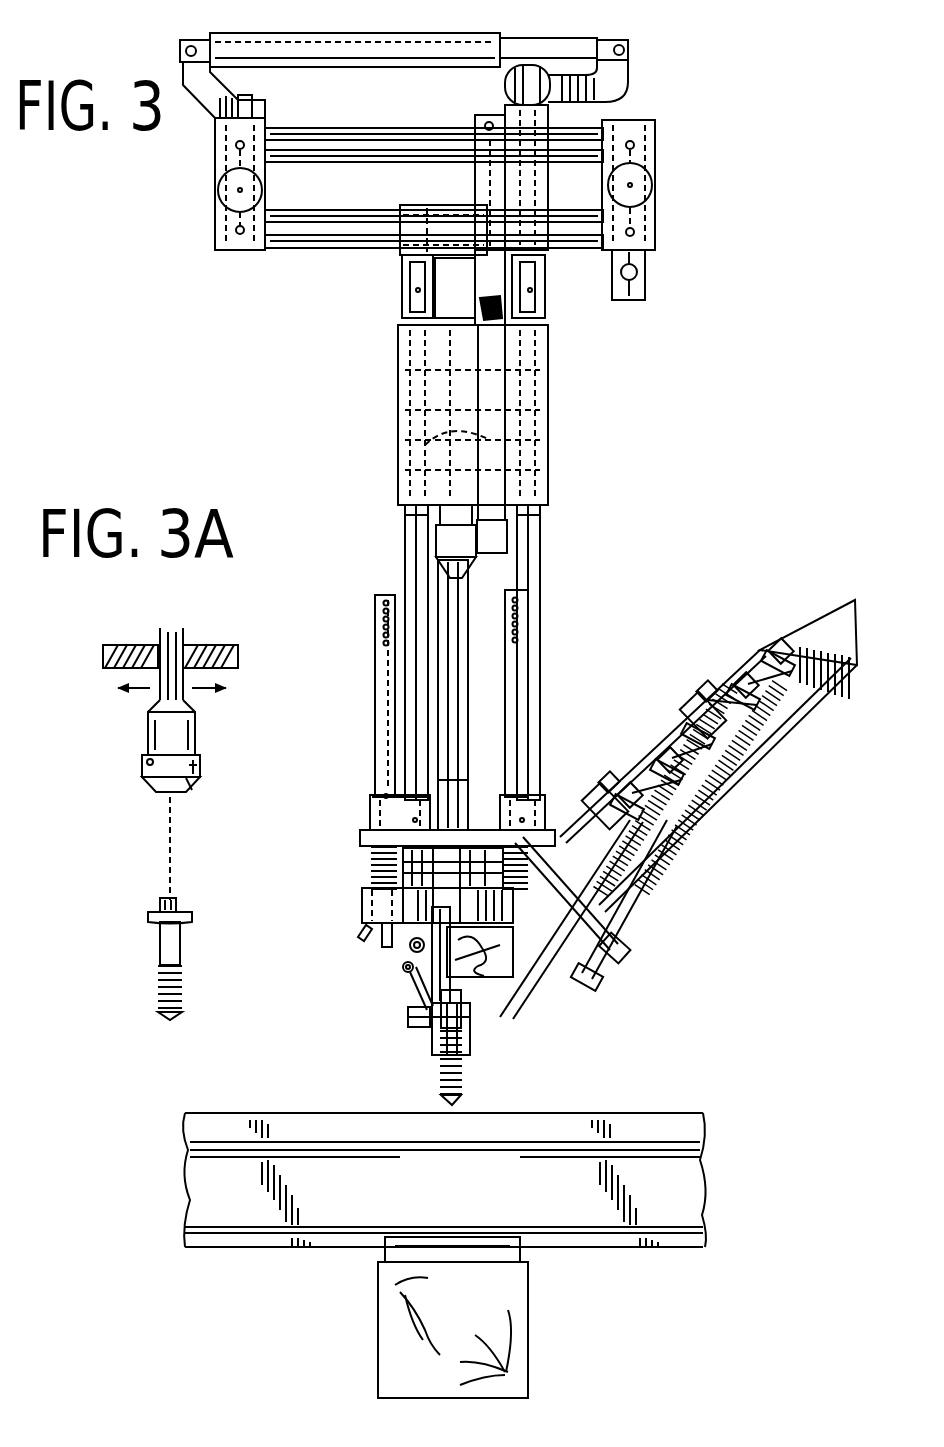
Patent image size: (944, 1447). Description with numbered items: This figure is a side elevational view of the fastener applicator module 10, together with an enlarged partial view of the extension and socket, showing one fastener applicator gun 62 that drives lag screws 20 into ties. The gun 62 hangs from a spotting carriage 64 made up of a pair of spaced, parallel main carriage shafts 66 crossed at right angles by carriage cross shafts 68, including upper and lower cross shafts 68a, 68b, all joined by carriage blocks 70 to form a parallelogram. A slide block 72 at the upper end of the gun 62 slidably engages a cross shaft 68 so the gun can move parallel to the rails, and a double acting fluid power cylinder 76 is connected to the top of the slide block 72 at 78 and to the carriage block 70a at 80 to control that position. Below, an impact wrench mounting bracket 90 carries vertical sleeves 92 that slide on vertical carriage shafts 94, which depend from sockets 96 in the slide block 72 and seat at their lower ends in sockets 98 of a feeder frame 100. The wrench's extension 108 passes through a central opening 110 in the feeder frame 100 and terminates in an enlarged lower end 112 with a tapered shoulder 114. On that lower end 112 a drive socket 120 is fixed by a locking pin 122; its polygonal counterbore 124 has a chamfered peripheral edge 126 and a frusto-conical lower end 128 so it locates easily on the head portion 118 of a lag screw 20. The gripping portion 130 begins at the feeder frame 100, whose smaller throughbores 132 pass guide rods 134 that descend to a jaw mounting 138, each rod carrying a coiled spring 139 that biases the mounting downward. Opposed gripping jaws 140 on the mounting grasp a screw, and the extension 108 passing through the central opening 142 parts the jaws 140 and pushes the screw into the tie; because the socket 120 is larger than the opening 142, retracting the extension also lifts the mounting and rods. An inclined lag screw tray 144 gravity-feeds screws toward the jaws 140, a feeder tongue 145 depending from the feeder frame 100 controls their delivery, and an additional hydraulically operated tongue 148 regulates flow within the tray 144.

In FIG. 3, the fastener applicator module 10 is at (732, 132).
In FIG. 3, the lag screw 20 is at (455, 1102).
In FIG. 3A, the lag screw 20 is at (172, 955).
In FIG. 3, the fastener applicator unit 62 is at (552, 448).
In FIG. 3, the spotting carriage 64 is at (655, 143).
In FIG. 3, the main carriage shaft 66 is at (238, 190).
In FIG. 3, the carriage cross shaft 68 is at (428, 148).
In FIG. 3, the upper cross shaft 68a is at (300, 135).
In FIG. 3, the lower cross shaft 68b is at (308, 236).
In FIG. 3, the carriage block 70 is at (655, 250).
In FIG. 3, the carriage block 70a is at (245, 252).
In FIG. 3, the slide block 72 is at (440, 205).
In FIG. 3, the double acting fluid power cylinder 76 is at (395, 52).
In FIG. 3, the connection point 78 is at (630, 48).
In FIG. 3, the connection point 80 is at (185, 42).
In FIG. 3, the impact wrench mounting bracket 90 is at (398, 470).
In FIG. 3, the vertically extending sleeve 92 is at (400, 507).
In FIG. 3, the vertical carriage shaft 94 is at (410, 570).
In FIG. 3, the socket 96 is at (400, 295).
In FIG. 3, the socket 98 is at (370, 815).
In FIG. 3, the feeder frame 100 is at (360, 838).
In FIG. 3, the extension 108 is at (455, 625).
In FIG. 3A, the extension 108 is at (185, 635).
In FIG. 3, the opening 110 is at (445, 830).
In FIG. 3, the lower end 112 is at (412, 948).
In FIG. 3A, the lower end 112 is at (195, 722).
In FIG. 3A, the shoulder 114 is at (150, 704).
In FIG. 3A, the head portion 118 is at (178, 905).
In FIG. 3, the drive socket 120 is at (440, 1000).
In FIG. 3A, the drive socket 120 is at (200, 766).
In FIG. 3A, the locking pin 122 is at (142, 760).
In FIG. 3A, the polygonal-shaped counterbore 124 is at (172, 800).
In FIG. 3A, the peripheral edge 126 is at (150, 782).
In FIG. 3A, the lower end 128 is at (190, 790).
In FIG. 3, the gripping portion 130 is at (338, 973).
In FIG. 3, the throughbore 132 is at (378, 795).
In FIG. 3, the guide rod 134 is at (378, 662).
In FIG. 3, the jaw mounting 138 is at (368, 900).
In FIG. 3A, the jaw mounting 138 is at (103, 656).
In FIG. 3, the coiled spring 139 is at (375, 860).
In FIG. 3, the gripping jaw 140 is at (443, 1000).
In FIG. 3A, the central opening 142 is at (160, 645).
In FIG. 3, the lag screw tray 144 is at (772, 732).
In FIG. 3, the feeder tongue 145 is at (428, 1047).
In FIG. 3, the hydraulically operated tongue 148 is at (552, 942).